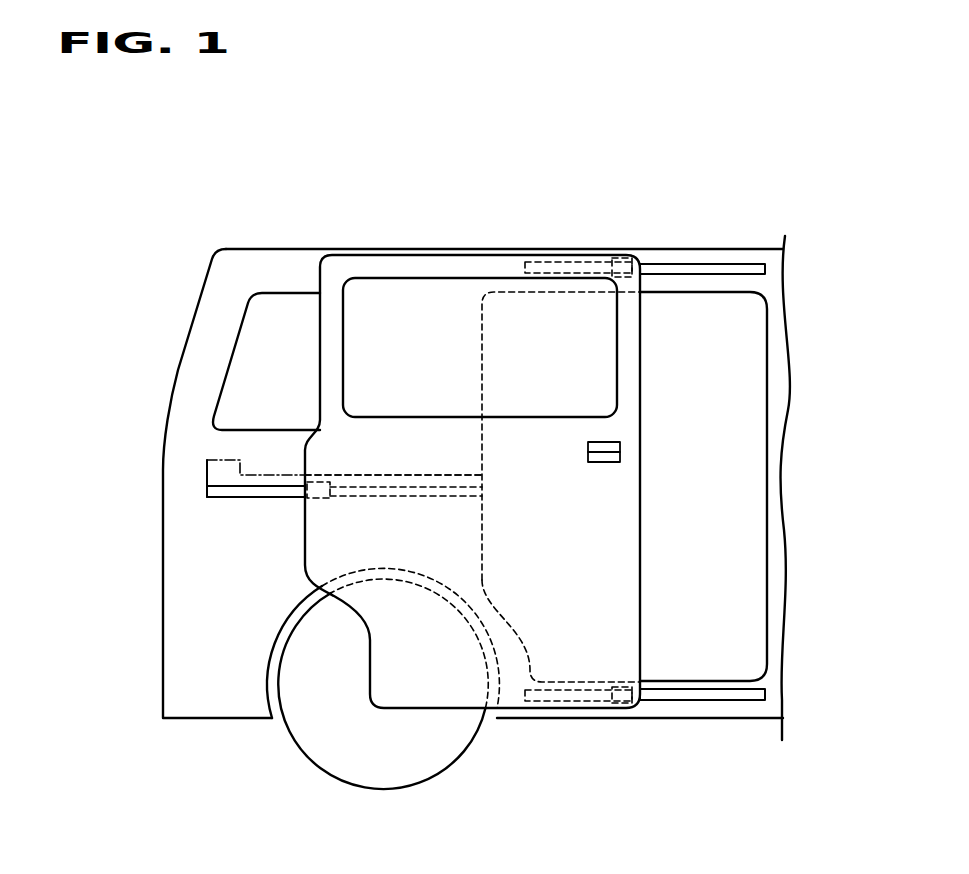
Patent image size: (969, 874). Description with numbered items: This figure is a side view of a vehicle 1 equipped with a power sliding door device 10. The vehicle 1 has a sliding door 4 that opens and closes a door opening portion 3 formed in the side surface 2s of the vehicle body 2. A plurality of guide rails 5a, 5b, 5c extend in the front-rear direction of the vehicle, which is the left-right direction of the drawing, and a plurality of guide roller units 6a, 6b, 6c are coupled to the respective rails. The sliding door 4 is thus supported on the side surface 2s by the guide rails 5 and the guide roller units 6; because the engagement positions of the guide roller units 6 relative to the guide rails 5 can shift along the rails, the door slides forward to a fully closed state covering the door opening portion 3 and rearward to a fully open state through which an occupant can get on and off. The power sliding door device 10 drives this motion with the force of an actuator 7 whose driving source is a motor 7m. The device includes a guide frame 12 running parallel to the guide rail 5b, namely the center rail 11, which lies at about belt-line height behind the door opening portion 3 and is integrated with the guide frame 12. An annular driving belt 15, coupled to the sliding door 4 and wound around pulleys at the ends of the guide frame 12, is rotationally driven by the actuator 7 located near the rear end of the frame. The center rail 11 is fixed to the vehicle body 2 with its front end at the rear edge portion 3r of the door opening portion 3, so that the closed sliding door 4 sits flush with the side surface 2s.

The vehicle 1 is at (822, 171).
The vehicle body 2 is at (300, 249).
The side surface 2s is at (188, 357).
The door opening portion 3 is at (753, 515).
The rear edge portion 3r is at (482, 556).
The sliding door 4 is at (640, 398).
The guide rails 5 is at (479, 443).
The guide rail 5a is at (717, 264).
The guide rail 5b is at (238, 525).
The guide rail 5c is at (717, 689).
The guide roller units 6 is at (487, 449).
The guide roller unit 6a is at (622, 250).
The guide roller unit 6b is at (327, 500).
The guide roller unit 6c is at (615, 688).
The actuator 7 is at (197, 445).
The motor 7m is at (207, 460).
The power sliding door device 10 is at (468, 449).
The center rail 11 is at (224, 498).
The guide frame 12 is at (393, 451).
The driving belt 15 is at (336, 475).